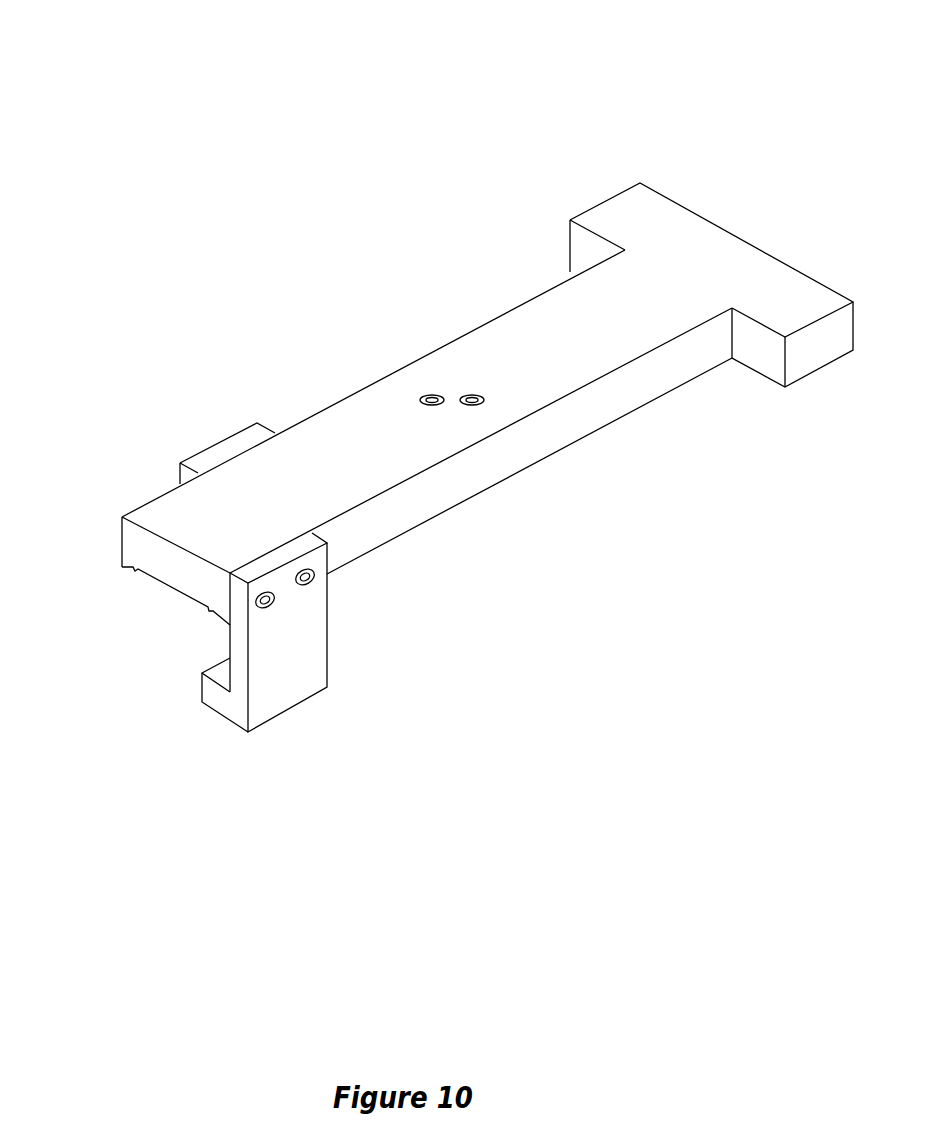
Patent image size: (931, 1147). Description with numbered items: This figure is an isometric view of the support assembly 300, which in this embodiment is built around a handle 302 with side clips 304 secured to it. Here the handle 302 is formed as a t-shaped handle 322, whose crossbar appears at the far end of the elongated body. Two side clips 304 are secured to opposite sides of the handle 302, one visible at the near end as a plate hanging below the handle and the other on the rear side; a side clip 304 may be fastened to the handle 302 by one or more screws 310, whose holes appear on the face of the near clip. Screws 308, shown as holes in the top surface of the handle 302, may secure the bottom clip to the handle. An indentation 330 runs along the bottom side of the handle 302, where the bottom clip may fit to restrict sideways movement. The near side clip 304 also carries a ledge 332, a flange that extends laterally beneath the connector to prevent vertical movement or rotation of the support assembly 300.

The support assembly 300 is at (105, 58).
The handle 302 is at (383, 454).
The side clips 304 is at (235, 440).
The screws 308 is at (445, 395).
The screws 310 is at (275, 593).
The t-shaped handle 322 is at (660, 175).
The indentation 330 is at (162, 612).
The ledge 332 is at (203, 730).